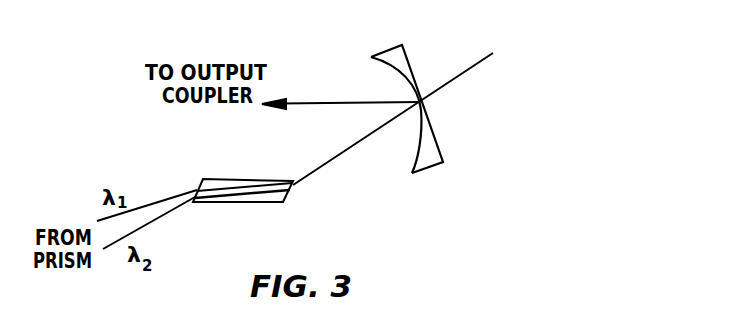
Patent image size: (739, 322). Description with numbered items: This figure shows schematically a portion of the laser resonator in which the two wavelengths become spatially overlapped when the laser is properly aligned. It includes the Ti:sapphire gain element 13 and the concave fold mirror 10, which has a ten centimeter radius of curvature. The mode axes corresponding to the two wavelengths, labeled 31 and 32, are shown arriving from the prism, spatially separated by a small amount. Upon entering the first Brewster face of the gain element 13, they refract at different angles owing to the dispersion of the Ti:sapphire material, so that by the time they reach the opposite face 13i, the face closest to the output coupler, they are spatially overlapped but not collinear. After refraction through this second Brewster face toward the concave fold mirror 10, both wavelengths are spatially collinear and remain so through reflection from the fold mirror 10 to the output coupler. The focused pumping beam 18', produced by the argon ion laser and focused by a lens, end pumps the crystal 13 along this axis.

The focused pumping beam 18' is at (393, 99).
The concave fold mirror 10 is at (430, 168).
The Ti:sapphire laser crystal 13 is at (275, 179).
The face of the Ti:sapphire laser crystal closest to the output coupler 13i is at (287, 196).
The mode axis of first wavelength 31 is at (152, 207).
The mode axis of second wavelength 32 is at (158, 217).